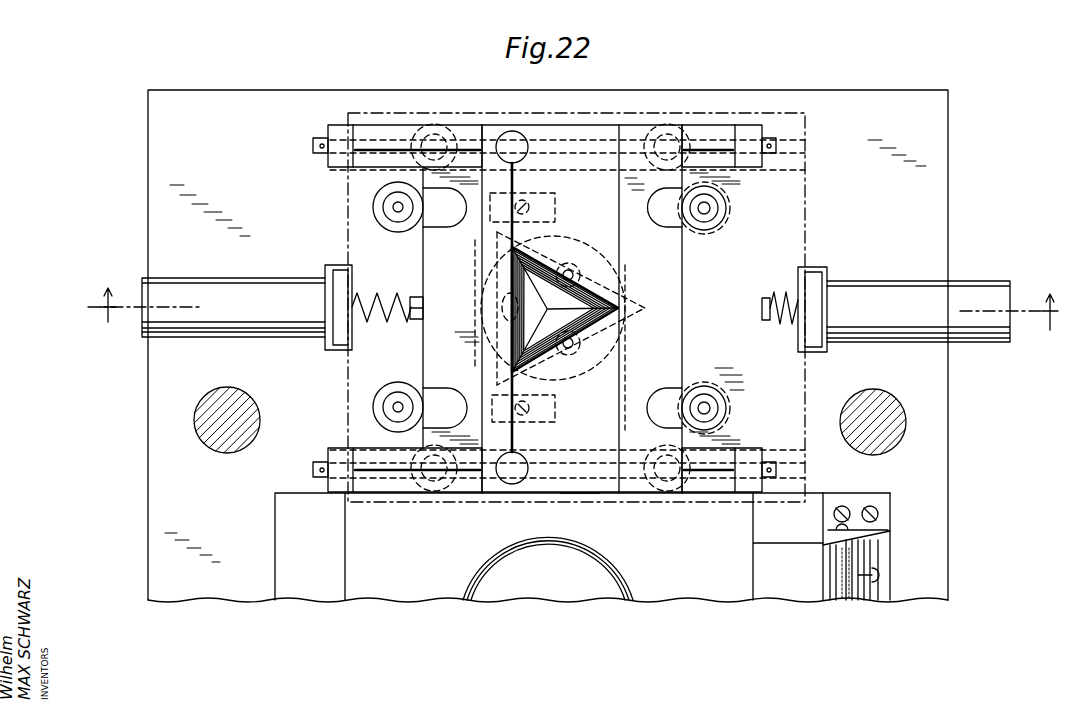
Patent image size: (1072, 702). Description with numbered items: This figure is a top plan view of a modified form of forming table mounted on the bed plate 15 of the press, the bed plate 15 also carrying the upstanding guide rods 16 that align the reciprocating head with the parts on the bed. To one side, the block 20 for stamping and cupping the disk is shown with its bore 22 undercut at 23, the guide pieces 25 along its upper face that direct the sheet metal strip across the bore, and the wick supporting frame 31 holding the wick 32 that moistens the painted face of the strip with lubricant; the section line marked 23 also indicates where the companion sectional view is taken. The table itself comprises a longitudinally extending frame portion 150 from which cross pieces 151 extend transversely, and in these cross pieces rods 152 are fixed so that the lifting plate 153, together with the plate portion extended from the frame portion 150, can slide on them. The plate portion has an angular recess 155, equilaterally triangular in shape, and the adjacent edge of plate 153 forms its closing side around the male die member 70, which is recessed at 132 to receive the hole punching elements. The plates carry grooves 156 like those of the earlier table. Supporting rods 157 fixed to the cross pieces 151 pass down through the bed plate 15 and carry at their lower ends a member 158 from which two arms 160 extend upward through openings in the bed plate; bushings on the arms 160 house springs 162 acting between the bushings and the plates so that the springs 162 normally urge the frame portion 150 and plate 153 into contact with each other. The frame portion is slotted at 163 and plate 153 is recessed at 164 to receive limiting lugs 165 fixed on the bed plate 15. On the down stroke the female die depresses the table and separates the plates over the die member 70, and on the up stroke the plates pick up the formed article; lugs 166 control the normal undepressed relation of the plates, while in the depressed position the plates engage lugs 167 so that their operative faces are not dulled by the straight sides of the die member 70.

The bed plate 15 is at (160, 150).
The guide rods 16 is at (200, 420).
The block 20 is at (312, 593).
The bore 22 is at (603, 573).
The undercut 23 is at (575, 296).
The guide pieces 25 is at (792, 535).
The wick supporting frame 31 is at (883, 522).
The wick 32 is at (845, 603).
The male die member 70 is at (596, 300).
The recesses 132 is at (503, 303).
The longitudinally extending frame portion 150 is at (758, 247).
The cross pieces 151 is at (725, 130).
The rods 152 is at (700, 140).
The lifting plate 153 is at (490, 248).
The angular recess 155 is at (552, 295).
The grooves 156 is at (478, 363).
The supporting rods 157 is at (438, 124).
The member 158 is at (568, 495).
The arms 160 is at (337, 343).
The springs 162 is at (387, 317).
The slot 163 is at (667, 215).
The recess 164 is at (442, 215).
The limiting lugs 165 is at (395, 207).
The lugs 166 is at (512, 130).
The lugs 167 is at (553, 193).